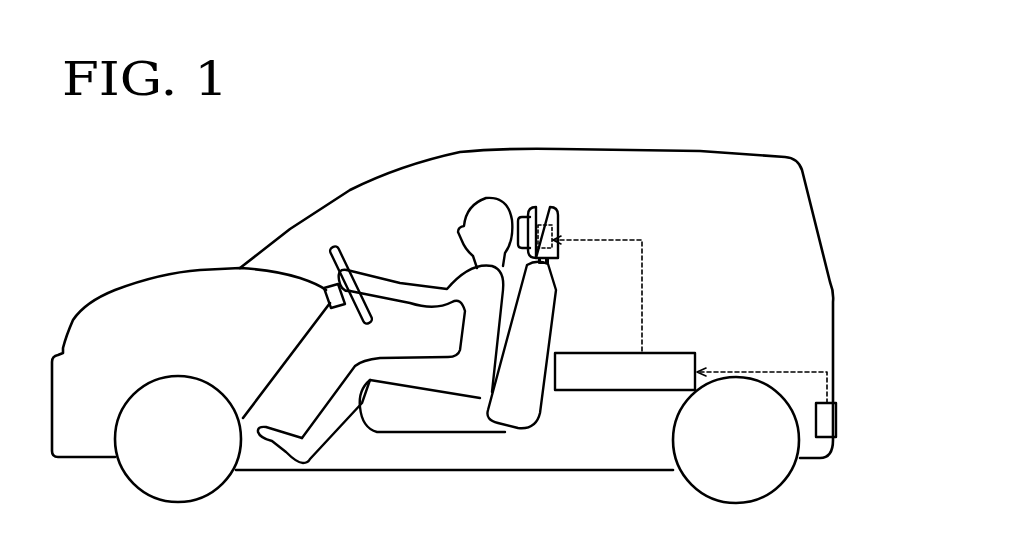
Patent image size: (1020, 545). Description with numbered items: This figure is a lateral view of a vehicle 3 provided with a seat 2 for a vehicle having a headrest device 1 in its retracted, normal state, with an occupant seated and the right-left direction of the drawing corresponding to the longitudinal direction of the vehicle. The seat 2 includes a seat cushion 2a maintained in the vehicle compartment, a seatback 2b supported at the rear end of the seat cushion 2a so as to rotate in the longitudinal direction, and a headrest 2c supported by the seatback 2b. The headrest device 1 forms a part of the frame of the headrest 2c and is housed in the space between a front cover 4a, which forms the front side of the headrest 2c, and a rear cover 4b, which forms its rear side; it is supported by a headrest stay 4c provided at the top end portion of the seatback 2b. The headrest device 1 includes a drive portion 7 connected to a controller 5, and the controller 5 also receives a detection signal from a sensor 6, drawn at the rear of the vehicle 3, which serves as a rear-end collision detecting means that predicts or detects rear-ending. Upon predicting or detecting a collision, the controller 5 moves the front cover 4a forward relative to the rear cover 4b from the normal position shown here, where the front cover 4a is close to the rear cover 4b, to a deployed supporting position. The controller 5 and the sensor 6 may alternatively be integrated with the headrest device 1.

The headrest device 1 is at (569, 258).
The seat 2 is at (480, 318).
The seat cushion 2a is at (437, 422).
The seatback 2b is at (540, 411).
The headrest 2c is at (545, 207).
The vehicle 3 is at (697, 150).
The front cover 4a is at (520, 216).
The rear cover 4b is at (556, 244).
The headrest stay 4c is at (548, 262).
The controller 5 is at (677, 352).
The sensor 6 is at (839, 417).
The drive portion 7 is at (556, 235).